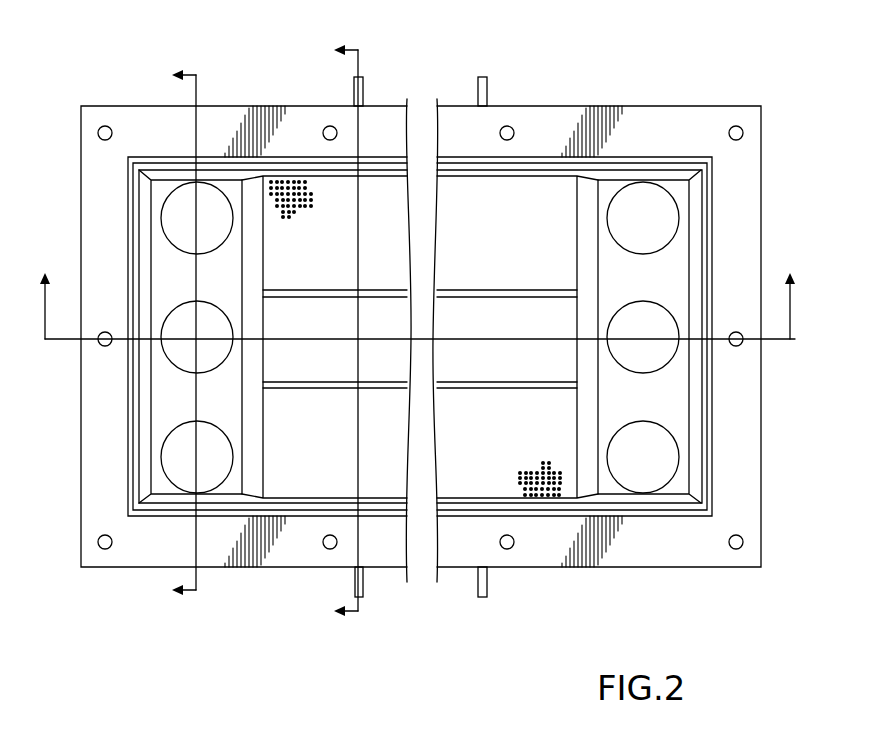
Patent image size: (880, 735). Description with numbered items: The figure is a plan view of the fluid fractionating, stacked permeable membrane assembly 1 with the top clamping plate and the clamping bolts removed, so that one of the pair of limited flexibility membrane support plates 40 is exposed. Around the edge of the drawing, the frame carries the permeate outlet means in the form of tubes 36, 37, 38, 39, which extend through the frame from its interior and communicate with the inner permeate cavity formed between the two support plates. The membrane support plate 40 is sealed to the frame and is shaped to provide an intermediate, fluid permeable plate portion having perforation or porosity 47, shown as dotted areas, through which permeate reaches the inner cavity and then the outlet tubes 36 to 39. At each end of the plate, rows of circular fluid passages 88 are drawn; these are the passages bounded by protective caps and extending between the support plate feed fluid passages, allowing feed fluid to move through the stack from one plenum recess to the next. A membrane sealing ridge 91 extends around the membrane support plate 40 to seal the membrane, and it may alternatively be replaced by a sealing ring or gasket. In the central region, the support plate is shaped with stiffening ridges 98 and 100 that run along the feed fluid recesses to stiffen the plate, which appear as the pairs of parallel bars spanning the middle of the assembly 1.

The fluid fractionating, stacked permeable membrane assembly 1 is at (425, 334).
The permeate outlet tube 36 is at (366, 82).
The permeate outlet tube 37 is at (490, 82).
The permeate outlet tube 38 is at (490, 594).
The permeate outlet tube 39 is at (366, 588).
The membrane support plate 40 is at (725, 570).
The perforation or porosity 47 is at (288, 183).
The fluid passage 88 is at (180, 217).
The membrane sealing ridge 91 is at (537, 152).
The stiffening ridge 98 is at (322, 390).
The stiffening ridge 100 is at (340, 287).